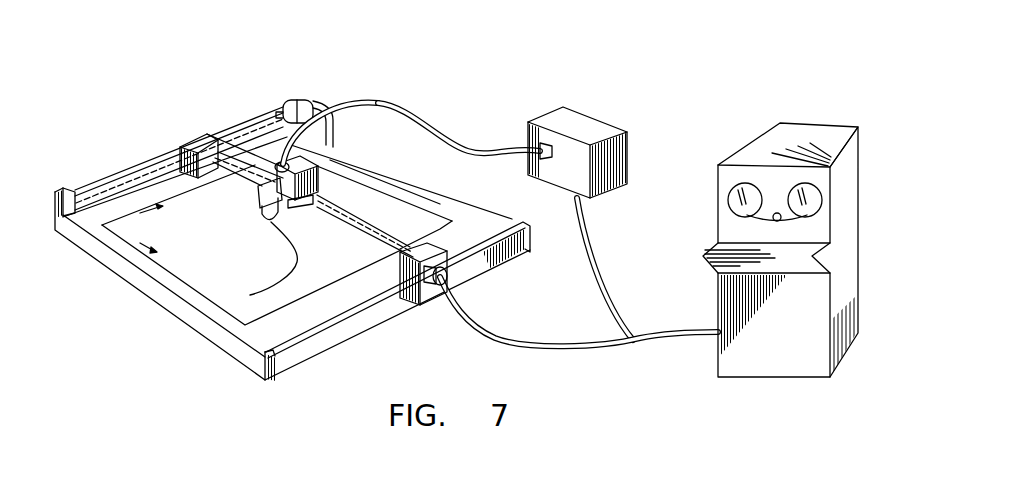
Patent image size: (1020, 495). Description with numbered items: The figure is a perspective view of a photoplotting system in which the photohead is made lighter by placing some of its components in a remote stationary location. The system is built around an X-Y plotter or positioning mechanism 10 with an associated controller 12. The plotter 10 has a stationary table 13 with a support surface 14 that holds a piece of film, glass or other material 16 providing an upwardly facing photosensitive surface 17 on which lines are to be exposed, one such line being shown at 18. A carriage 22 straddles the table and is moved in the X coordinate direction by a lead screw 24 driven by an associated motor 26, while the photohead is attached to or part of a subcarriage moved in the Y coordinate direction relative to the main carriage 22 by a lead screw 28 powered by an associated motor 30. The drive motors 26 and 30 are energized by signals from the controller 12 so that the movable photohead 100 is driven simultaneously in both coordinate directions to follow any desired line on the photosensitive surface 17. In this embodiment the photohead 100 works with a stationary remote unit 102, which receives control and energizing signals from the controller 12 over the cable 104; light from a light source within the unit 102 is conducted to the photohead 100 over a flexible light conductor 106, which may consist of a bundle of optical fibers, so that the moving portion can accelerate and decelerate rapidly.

The X-Y plotter 10 is at (383, 183).
The controller 12 is at (832, 135).
The stationary table 13 is at (162, 295).
The support surface 14 is at (458, 218).
The material 16 is at (470, 224).
The photosensitive surface 17 is at (410, 213).
The line 18 is at (299, 262).
The carriage 22 is at (466, 240).
The lead screw 24 is at (258, 120).
The motor 26 is at (293, 100).
The lead screw 28 is at (377, 248).
The motor 30 is at (453, 273).
The movable photohead 100 is at (334, 143).
The stationary remote unit 102 is at (595, 123).
The cable 104 is at (607, 278).
The flexible light conductor 106 is at (473, 143).